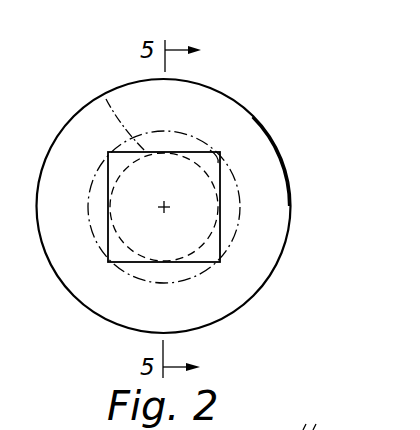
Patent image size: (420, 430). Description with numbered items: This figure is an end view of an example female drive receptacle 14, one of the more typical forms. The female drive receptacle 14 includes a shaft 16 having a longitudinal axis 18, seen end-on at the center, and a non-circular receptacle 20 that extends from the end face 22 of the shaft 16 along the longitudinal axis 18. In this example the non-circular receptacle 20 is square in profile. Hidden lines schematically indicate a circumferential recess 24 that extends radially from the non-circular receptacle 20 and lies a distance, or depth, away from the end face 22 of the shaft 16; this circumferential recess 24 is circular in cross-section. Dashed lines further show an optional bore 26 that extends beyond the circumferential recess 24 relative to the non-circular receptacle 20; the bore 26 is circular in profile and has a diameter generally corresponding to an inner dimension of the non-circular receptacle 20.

The female drive receptacle 14 is at (277, 92).
The shaft 16 is at (284, 143).
The longitudinal axis 18 is at (166, 209).
The non-circular receptacle 20 is at (210, 150).
The end face 22 is at (279, 220).
The circumferential recess 24 is at (100, 98).
The bore 26 is at (113, 182).